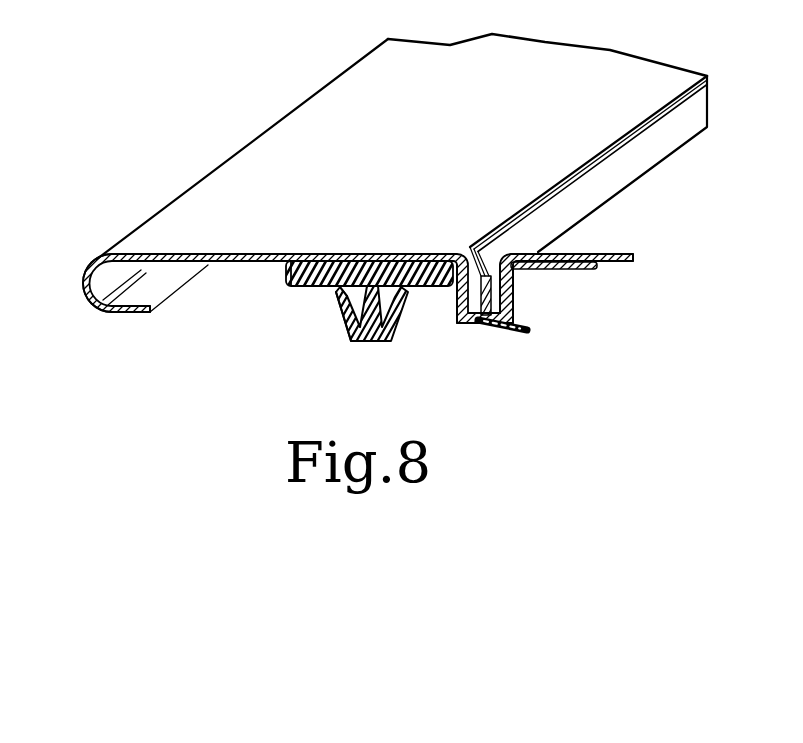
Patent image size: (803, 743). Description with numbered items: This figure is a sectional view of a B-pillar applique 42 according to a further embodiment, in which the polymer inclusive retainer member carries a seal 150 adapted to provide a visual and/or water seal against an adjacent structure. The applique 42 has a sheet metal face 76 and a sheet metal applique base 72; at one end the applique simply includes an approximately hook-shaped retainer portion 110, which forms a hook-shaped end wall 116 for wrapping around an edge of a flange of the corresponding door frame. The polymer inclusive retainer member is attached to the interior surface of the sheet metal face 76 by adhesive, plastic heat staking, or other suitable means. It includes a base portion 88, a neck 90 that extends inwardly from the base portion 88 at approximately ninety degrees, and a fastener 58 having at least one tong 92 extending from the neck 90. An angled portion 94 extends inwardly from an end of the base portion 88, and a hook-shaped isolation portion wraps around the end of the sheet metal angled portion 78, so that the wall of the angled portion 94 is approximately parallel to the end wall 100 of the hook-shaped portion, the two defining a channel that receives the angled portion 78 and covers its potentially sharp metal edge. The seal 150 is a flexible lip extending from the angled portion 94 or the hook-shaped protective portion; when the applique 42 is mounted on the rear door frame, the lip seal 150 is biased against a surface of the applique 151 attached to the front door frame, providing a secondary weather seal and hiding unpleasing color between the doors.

The applique 42 is at (236, 127).
The sheet metal face 76 is at (365, 88).
The applique base 72 is at (157, 255).
The hook-shaped retainer portion 110 is at (87, 289).
The hook-shaped end wall 116 is at (125, 312).
The base portion 88 is at (292, 260).
The angled portion 78 is at (358, 259).
The end wall 100 is at (483, 252).
The tong 92 is at (340, 292).
The neck 90 is at (345, 316).
The angled portion 94 is at (458, 290).
The applique 151 is at (506, 294).
The fastener 58 is at (380, 342).
The seal 150 is at (493, 333).